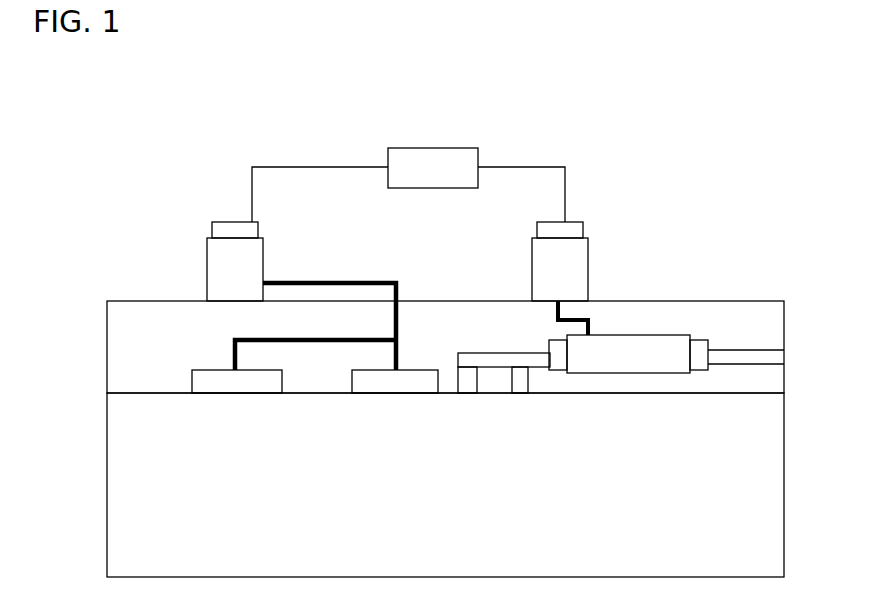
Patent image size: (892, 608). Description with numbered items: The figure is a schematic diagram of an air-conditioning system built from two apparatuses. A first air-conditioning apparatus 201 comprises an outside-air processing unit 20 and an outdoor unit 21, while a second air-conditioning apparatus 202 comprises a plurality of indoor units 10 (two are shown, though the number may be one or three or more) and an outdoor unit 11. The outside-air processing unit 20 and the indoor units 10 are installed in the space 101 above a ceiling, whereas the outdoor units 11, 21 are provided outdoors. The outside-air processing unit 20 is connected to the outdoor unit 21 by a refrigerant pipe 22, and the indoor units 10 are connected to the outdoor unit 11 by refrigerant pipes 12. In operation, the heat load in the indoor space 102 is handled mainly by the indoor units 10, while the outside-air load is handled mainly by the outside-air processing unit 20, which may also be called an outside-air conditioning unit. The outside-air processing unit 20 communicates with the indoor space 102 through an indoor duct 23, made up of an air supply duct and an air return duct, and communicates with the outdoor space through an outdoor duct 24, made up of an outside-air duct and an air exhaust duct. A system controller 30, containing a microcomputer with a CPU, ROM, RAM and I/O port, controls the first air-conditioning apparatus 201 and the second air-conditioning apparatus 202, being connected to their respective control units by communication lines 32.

The indoor unit 10 is at (207, 370).
The outdoor unit 11 is at (207, 250).
The refrigerant pipe 12 is at (346, 283).
The outside-air processing unit 20 is at (672, 335).
The outdoor unit 21 is at (588, 253).
The refrigerant pipe 22 is at (590, 331).
The indoor duct 23 is at (495, 353).
The outdoor duct 24 is at (745, 350).
The system controller 30 is at (434, 148).
The communication line 32 is at (327, 167).
The space above a ceiling 101 is at (160, 351).
The indoor space 102 is at (162, 431).
The first air-conditioning apparatus 201 is at (630, 216).
The second air-conditioning apparatus 202 is at (172, 217).